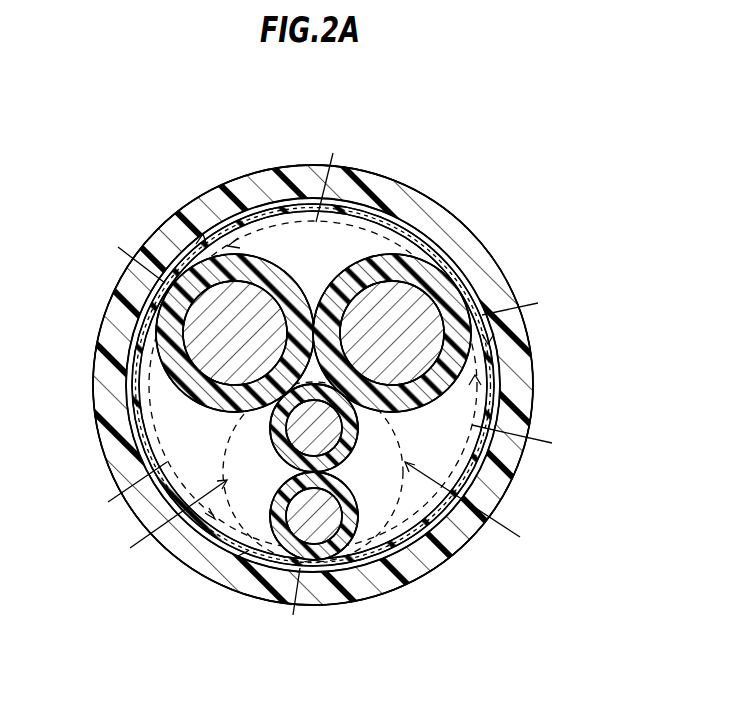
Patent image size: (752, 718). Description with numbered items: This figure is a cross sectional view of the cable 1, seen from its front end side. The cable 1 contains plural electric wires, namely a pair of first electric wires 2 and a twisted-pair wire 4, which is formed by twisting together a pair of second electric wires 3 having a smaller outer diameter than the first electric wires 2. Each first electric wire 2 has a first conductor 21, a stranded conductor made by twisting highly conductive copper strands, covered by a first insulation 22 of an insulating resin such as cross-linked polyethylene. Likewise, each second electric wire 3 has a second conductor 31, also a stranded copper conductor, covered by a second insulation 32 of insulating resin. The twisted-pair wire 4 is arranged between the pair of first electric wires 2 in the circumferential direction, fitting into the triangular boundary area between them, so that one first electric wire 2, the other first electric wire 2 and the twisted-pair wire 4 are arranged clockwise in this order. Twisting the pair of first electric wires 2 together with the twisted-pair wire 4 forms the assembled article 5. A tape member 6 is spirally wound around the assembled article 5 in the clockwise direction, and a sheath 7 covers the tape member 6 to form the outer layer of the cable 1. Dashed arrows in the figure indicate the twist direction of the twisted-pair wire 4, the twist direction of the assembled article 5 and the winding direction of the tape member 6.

The cable 1 is at (150, 142).
The first electric wire 2 is at (351, 273).
The first conductor 21 is at (390, 300).
The first insulation 22 is at (400, 280).
The second electric wire 3 is at (370, 517).
The second conductor 31 is at (330, 518).
The second insulation 32 is at (338, 532).
The twisted-pair wire 4 is at (238, 528).
The assembled article 5 is at (435, 436).
The tape member 6 is at (497, 390).
The sheath 7 is at (518, 347).